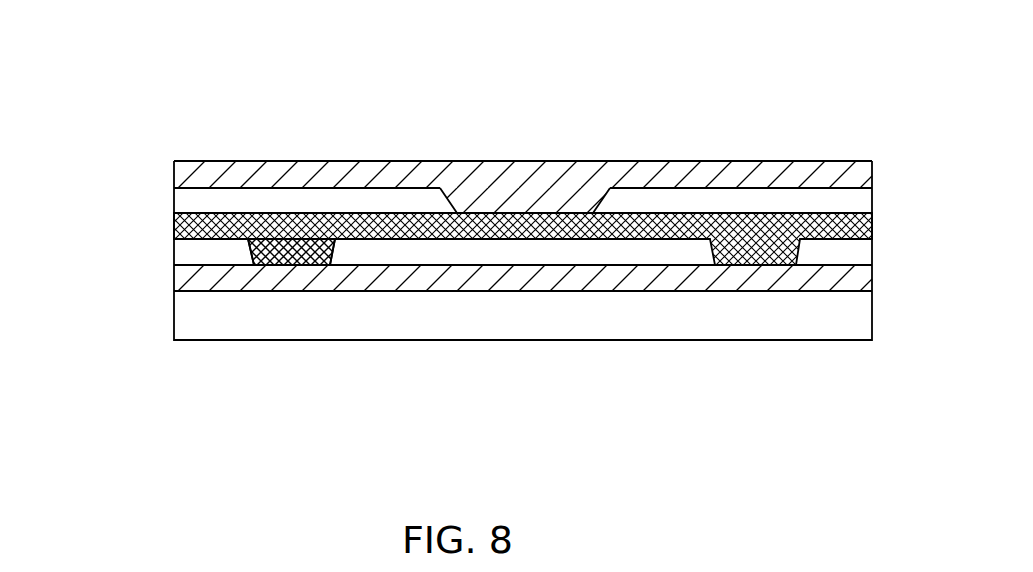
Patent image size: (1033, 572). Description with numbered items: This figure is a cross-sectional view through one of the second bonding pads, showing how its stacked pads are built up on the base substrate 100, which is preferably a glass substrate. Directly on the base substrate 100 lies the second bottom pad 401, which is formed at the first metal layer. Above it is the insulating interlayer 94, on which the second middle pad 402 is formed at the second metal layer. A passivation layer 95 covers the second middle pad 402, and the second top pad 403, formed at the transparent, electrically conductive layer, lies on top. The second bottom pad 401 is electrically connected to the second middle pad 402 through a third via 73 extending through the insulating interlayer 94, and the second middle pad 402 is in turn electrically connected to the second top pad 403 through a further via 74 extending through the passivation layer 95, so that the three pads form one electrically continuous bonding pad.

The base substrate 100 is at (823, 322).
The passivation layer 95 is at (823, 206).
The insulating interlayer 94 is at (833, 258).
The second top pad 403 is at (213, 177).
The second middle pad 402 is at (177, 228).
The second bottom pad 401 is at (177, 283).
The second via contact 74 is at (453, 208).
The third via 73 is at (330, 250).